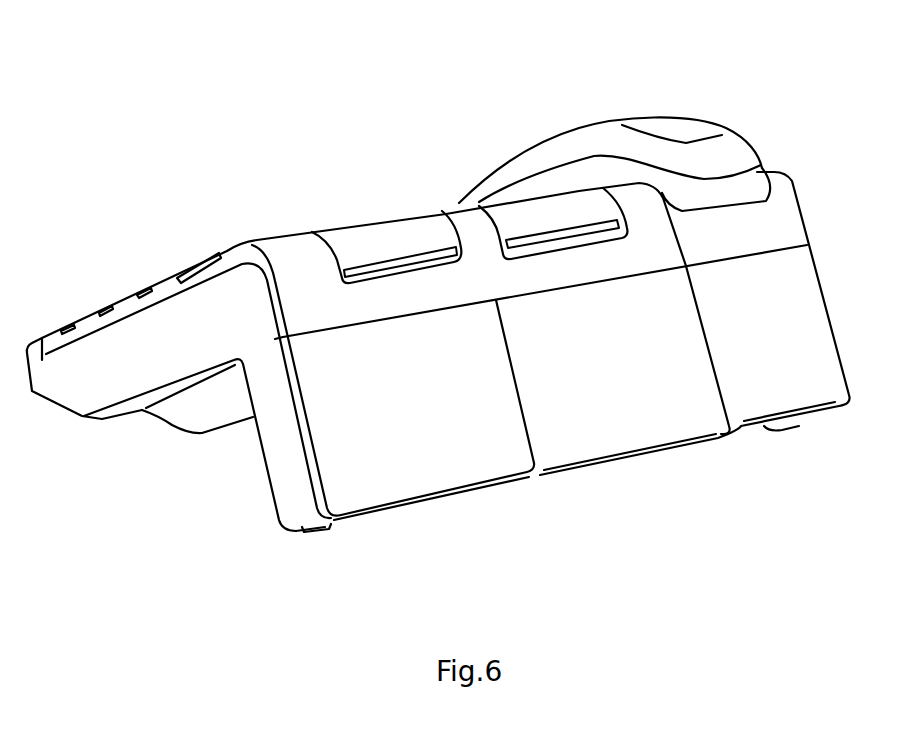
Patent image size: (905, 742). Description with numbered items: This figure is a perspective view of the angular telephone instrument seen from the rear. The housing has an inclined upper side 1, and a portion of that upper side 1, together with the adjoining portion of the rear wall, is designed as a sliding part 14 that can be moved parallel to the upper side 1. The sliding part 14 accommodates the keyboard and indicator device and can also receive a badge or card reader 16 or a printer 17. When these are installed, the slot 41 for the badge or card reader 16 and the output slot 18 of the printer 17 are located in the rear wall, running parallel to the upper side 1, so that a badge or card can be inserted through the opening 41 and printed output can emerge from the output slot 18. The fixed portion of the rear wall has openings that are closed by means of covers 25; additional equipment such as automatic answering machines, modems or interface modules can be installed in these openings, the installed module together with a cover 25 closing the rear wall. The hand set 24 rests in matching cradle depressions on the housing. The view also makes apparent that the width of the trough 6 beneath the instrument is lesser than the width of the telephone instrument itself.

The upper side 1 is at (230, 245).
The trough 6 is at (207, 420).
The sliding part 14 is at (470, 223).
The badge or card reader 16 is at (340, 234).
The printer 17 is at (547, 222).
The output slot 18 is at (554, 212).
The hand set 24 is at (707, 153).
The cover 25 is at (435, 468).
The opening 41 is at (417, 252).